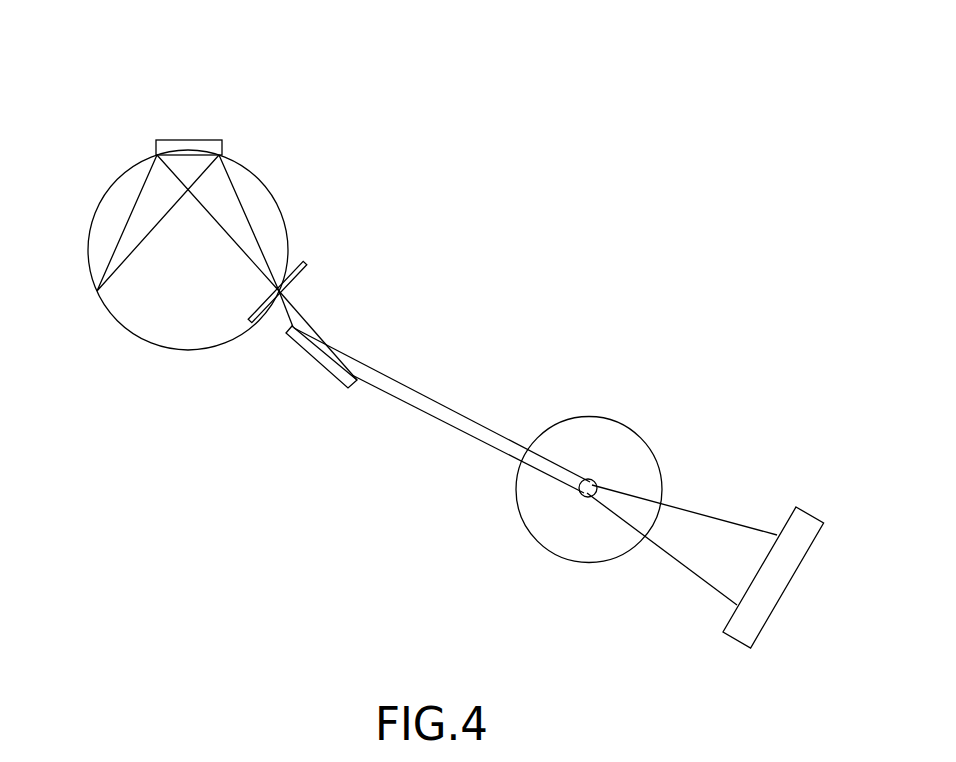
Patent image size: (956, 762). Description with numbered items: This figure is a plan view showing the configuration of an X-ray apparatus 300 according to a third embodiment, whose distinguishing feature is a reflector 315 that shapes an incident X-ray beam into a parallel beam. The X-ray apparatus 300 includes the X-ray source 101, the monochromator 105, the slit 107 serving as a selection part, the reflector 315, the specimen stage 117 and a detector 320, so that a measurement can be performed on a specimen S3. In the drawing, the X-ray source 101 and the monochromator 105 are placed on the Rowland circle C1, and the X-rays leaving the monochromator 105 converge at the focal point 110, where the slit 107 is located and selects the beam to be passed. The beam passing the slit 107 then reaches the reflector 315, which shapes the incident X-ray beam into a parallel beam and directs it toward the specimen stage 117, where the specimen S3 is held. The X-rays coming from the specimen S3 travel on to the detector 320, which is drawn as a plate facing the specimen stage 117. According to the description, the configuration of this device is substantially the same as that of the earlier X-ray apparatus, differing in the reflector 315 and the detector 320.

The X-ray apparatus 300 is at (410, 66).
The Rowland circle C1 is at (101, 197).
The monochromator 105 is at (181, 138).
The X-ray source 101 is at (97, 291).
The slit 107 is at (308, 264).
The focal point 110 is at (283, 294).
The reflector 315 is at (323, 368).
The specimen stage 117 is at (587, 416).
The specimen S3 is at (586, 498).
The detector 320 is at (790, 590).